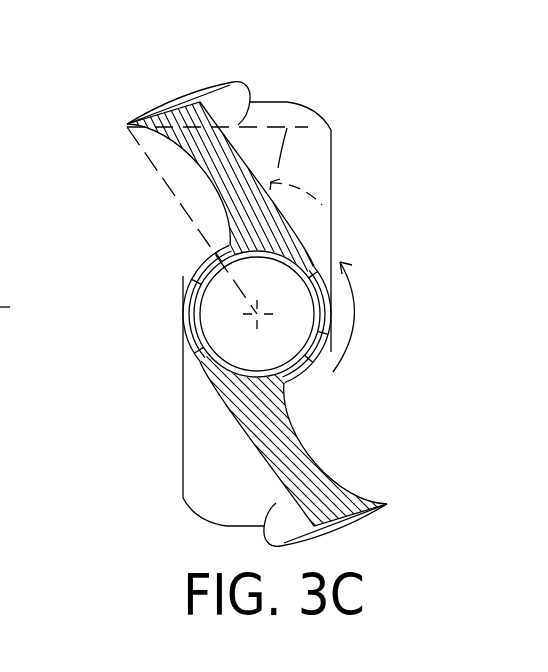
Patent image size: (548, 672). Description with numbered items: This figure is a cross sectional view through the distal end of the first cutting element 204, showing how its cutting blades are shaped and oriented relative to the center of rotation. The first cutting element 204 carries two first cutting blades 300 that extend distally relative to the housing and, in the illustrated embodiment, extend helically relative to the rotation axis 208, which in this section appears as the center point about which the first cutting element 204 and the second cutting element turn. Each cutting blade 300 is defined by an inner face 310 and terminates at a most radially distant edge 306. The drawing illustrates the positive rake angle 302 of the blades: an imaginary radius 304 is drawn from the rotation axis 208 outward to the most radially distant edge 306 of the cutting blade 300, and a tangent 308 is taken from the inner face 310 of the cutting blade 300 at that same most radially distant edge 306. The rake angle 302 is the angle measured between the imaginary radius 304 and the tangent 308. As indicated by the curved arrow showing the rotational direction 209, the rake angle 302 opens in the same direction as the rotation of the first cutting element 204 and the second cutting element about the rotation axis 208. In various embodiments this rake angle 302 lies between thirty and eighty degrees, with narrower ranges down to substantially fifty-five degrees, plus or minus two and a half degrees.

The first cutting element 204 is at (379, 61).
The rotation axis 208 is at (257, 314).
The rotational direction 209 is at (358, 319).
The first cutting blade 300 is at (128, 124).
The rake angle 302 is at (333, 209).
The imaginary radius 304 is at (167, 226).
The most radially distant edge 306 is at (128, 125).
The tangent 308 is at (258, 95).
The inner face 310 is at (200, 158).